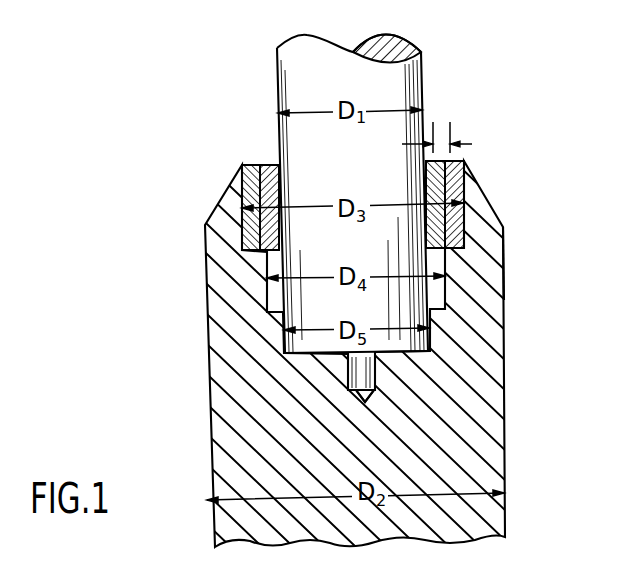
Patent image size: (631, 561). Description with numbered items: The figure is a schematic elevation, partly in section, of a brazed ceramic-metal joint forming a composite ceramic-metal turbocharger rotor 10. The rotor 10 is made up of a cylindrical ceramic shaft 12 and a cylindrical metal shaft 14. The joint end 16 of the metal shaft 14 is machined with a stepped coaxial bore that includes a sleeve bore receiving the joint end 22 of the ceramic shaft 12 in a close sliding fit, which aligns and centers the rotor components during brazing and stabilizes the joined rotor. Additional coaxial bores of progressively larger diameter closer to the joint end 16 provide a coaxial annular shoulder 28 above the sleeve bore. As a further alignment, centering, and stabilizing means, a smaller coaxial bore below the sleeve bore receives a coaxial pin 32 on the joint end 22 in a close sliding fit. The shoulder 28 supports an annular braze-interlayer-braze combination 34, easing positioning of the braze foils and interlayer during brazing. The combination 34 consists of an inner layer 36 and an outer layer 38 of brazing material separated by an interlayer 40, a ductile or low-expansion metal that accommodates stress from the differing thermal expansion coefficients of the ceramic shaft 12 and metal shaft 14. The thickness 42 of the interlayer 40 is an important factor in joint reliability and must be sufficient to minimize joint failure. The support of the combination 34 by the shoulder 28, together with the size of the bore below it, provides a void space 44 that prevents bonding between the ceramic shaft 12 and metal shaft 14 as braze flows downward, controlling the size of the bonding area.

The composite ceramic-metal turbocharger rotor 10 is at (467, 93).
The ceramic shaft 12 is at (404, 105).
The metal shaft 14 is at (483, 480).
The joint end 16 is at (463, 163).
The joint end 22 is at (395, 357).
The annular shoulder 28 is at (494, 229).
The alignment, centering, and stabilizing pin 32 is at (377, 389).
The braze-interlayer-braze combination 34 is at (465, 189).
The inner layer 36 is at (276, 164).
The outer layer 38 is at (250, 165).
The interlayer 40 is at (258, 165).
The thickness 42 is at (434, 128).
The void space 44 is at (446, 288).